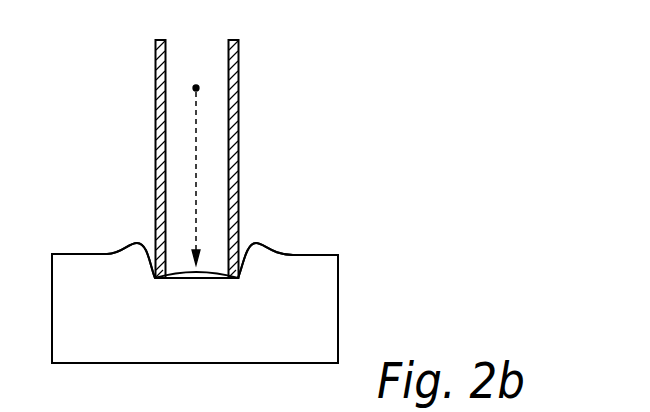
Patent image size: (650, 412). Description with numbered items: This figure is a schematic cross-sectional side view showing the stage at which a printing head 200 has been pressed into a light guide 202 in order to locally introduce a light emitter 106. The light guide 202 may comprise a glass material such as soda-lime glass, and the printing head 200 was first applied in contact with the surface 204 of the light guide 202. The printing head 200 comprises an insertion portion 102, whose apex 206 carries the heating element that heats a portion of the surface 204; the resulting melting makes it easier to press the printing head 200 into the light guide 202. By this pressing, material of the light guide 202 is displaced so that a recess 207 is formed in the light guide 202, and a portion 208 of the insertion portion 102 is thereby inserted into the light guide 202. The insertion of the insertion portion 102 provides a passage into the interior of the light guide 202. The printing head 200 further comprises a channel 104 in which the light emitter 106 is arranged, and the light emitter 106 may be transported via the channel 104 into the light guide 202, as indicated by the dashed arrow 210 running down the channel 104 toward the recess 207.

The printing head 200 is at (285, 55).
The insertion portion 102 is at (142, 223).
The channel 104 is at (180, 120).
The light emitter 106 is at (198, 87).
The dashed arrow 210 is at (197, 152).
The portion of the insertion portion 208 is at (242, 238).
The surface of the light guide 204 is at (312, 254).
The light guide 202 is at (312, 297).
The apex of the insertion portion 206 is at (155, 273).
The recess 207 is at (180, 268).